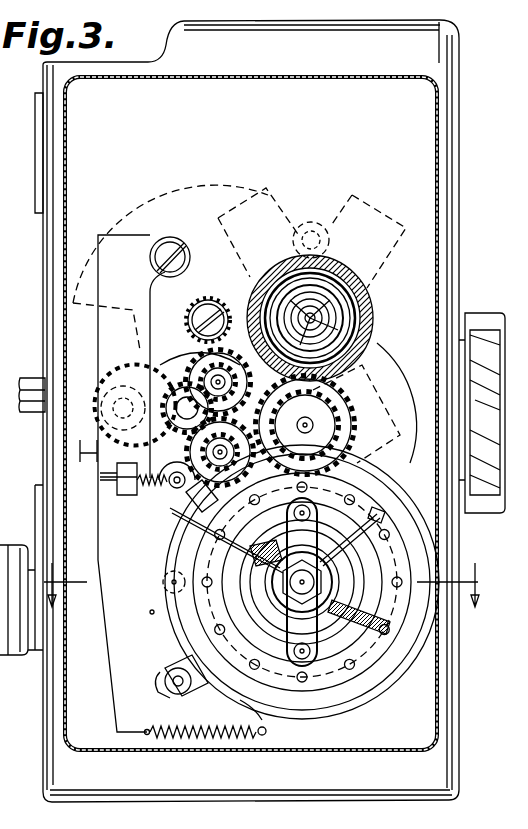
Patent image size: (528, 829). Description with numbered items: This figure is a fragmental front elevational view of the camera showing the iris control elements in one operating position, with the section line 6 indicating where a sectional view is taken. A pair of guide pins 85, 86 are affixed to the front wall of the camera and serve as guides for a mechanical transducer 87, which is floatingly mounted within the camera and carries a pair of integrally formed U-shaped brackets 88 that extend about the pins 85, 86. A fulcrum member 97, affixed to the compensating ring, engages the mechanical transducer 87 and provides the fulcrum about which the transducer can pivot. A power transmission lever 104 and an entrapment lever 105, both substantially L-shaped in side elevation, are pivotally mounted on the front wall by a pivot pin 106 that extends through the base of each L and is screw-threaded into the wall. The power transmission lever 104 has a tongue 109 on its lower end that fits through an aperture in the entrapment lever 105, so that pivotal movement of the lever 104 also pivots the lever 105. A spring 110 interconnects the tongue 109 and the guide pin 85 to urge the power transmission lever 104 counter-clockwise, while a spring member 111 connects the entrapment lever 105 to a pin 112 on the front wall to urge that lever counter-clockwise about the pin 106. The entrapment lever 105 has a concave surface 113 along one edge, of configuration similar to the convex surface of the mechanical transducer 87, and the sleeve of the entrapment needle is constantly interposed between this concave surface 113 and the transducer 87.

The section line 6- 6 is at (262, 573).
The guide pin 85 is at (195, 497).
The guide pin 86 is at (178, 697).
The mechanical transducer 87 is at (163, 573).
The U-shaped brackets 88 is at (210, 502).
The fulcrum member 97 is at (165, 588).
The power transmission lever 104 is at (97, 453).
The entrapment lever 105 is at (110, 655).
The pivot pin 106 is at (168, 250).
The tongue 109 is at (120, 492).
The spring 110 is at (160, 487).
The spring member 111 is at (262, 720).
The pin 112 is at (266, 731).
The concave surface 113 is at (152, 613).